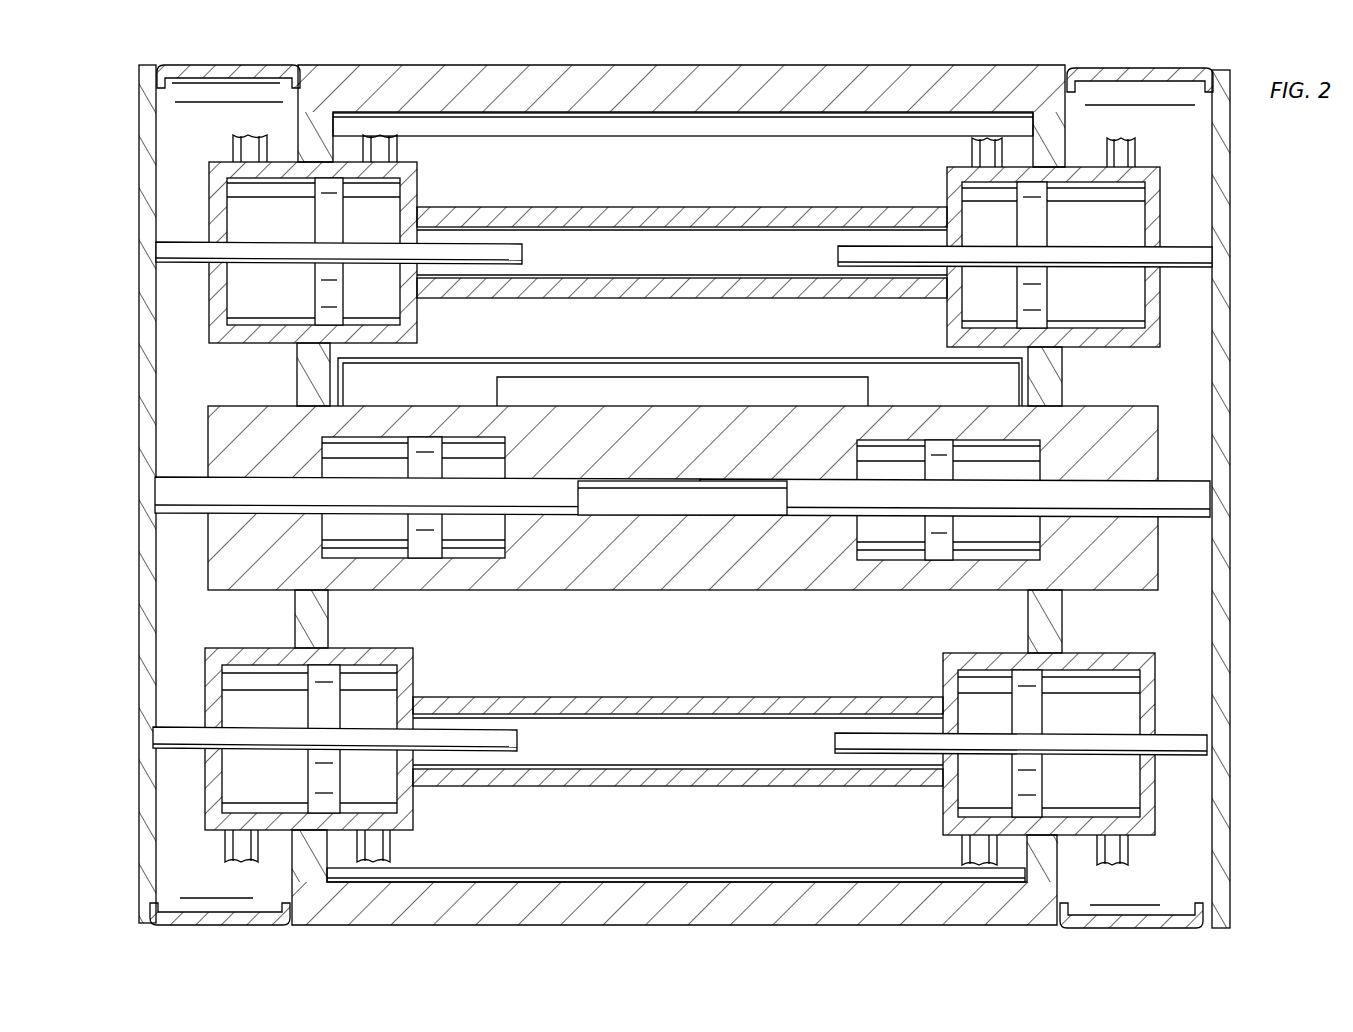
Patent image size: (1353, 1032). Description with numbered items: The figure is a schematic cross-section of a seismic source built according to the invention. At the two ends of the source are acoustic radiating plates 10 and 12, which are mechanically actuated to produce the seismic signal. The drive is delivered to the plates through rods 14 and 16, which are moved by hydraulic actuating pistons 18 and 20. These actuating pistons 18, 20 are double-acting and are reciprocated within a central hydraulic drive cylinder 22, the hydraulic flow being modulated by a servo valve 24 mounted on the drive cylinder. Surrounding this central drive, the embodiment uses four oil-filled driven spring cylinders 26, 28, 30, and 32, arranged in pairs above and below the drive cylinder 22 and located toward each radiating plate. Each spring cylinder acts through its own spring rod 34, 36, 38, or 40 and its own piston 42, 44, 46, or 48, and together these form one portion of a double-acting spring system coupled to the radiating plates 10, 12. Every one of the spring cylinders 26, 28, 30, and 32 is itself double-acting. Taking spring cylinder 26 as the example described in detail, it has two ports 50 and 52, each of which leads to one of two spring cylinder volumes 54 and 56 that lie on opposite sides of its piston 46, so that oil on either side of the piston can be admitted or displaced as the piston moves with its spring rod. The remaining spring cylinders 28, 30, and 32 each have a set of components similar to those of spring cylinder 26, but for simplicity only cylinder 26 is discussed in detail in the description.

The acoustic radiating plate 10 is at (1230, 362).
The acoustic radiating plate 12 is at (138, 336).
The rod 14 is at (1193, 523).
The rod 16 is at (167, 483).
The hydraulic actuating piston 18 is at (922, 540).
The hydraulic actuating piston 20 is at (442, 538).
The hydraulic drive cylinder 22 is at (700, 573).
The servo valve 24 is at (897, 358).
The spring cylinder 26 is at (943, 672).
The spring cylinder 28 is at (1157, 167).
The spring cylinder 30 is at (417, 175).
The spring cylinder 32 is at (410, 678).
The spring rod 34 is at (1190, 730).
The spring rod 36 is at (1195, 243).
The spring rod 38 is at (165, 241).
The spring rod 40 is at (168, 730).
The piston 42 is at (320, 220).
The piston 44 is at (320, 705).
The piston 46 is at (1040, 773).
The piston 48 is at (1043, 288).
The port 50 is at (963, 850).
The port 52 is at (1125, 860).
The spring cylinder volume 54 is at (997, 801).
The spring cylinder volume 56 is at (1131, 801).